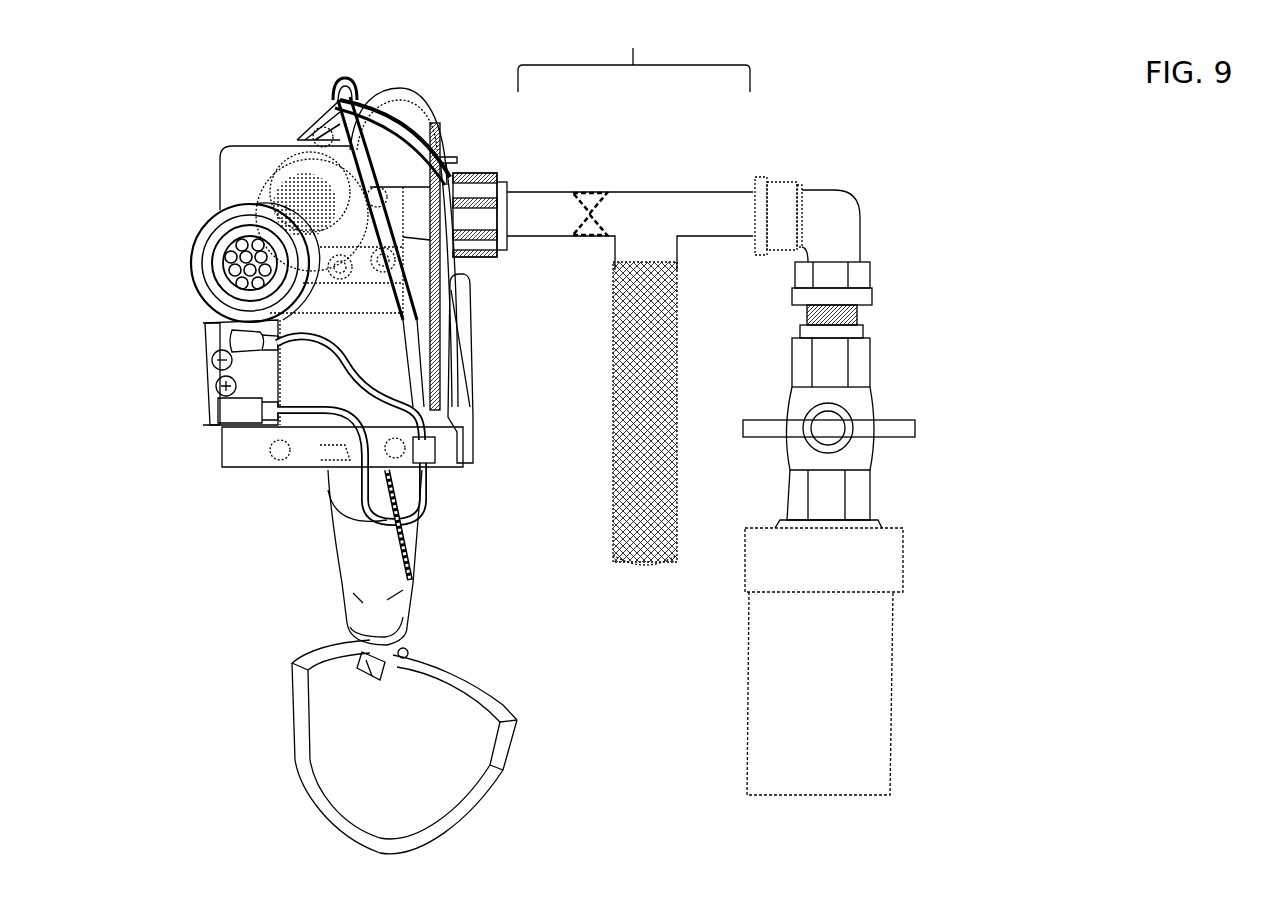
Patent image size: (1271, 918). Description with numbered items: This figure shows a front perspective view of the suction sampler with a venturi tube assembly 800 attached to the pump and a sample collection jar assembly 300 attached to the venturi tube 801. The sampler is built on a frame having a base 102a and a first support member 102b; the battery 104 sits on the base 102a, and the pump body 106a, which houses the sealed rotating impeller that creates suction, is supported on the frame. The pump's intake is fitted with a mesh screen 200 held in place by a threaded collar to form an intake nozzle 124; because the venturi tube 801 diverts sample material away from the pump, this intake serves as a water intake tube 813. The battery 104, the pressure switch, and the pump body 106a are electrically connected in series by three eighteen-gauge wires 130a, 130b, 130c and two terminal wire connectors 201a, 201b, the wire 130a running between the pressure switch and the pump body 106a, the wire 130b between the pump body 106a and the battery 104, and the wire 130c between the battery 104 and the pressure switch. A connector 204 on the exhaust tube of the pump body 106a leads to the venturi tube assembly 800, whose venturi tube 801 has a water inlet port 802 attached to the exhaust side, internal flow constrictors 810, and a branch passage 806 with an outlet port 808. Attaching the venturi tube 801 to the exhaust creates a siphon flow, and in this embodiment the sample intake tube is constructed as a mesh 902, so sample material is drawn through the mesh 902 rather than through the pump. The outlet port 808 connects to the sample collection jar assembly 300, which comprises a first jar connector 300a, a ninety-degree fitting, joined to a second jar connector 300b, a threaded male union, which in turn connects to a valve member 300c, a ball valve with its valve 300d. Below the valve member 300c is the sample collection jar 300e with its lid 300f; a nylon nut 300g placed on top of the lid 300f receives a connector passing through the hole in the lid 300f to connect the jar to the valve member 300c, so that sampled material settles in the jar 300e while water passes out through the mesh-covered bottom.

The base 102a is at (453, 445).
The first support member 102b is at (240, 158).
The battery 104 is at (468, 360).
The pump body 106a is at (383, 108).
The intake nozzle 124 is at (203, 297).
The wire 130a is at (327, 97).
The wire 130b is at (448, 263).
The wire 130c is at (338, 367).
The mesh screen 200 is at (217, 267).
The terminal wire connector 201a is at (227, 337).
The terminal wire connector 201b is at (220, 410).
The connector 204 is at (478, 172).
The venturi tube assembly 800 is at (634, 58).
The venturi tube 801 is at (540, 190).
The water inlet port 802 is at (507, 212).
The branch passage 806 is at (670, 207).
The outlet port 808 is at (752, 204).
The internal flow constrictors 810 is at (600, 190).
The water intake tube 813 is at (293, 193).
The mesh 902 is at (677, 413).
The sample collection jar assembly 300 is at (921, 479).
The first jar connector 300a is at (842, 203).
The second jar connector 300b is at (855, 331).
The valve member 300c is at (862, 429).
The valve 300d is at (831, 423).
The sample collection jar 300e is at (848, 693).
The lid 300f is at (893, 580).
The nylon nut 300g is at (880, 532).